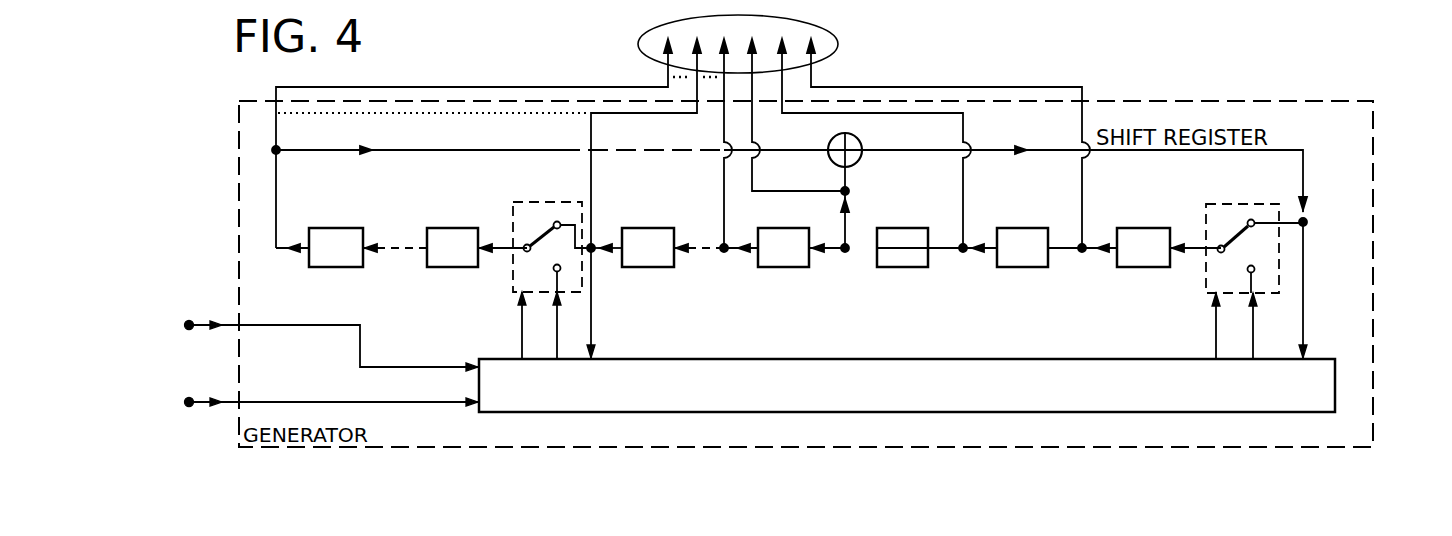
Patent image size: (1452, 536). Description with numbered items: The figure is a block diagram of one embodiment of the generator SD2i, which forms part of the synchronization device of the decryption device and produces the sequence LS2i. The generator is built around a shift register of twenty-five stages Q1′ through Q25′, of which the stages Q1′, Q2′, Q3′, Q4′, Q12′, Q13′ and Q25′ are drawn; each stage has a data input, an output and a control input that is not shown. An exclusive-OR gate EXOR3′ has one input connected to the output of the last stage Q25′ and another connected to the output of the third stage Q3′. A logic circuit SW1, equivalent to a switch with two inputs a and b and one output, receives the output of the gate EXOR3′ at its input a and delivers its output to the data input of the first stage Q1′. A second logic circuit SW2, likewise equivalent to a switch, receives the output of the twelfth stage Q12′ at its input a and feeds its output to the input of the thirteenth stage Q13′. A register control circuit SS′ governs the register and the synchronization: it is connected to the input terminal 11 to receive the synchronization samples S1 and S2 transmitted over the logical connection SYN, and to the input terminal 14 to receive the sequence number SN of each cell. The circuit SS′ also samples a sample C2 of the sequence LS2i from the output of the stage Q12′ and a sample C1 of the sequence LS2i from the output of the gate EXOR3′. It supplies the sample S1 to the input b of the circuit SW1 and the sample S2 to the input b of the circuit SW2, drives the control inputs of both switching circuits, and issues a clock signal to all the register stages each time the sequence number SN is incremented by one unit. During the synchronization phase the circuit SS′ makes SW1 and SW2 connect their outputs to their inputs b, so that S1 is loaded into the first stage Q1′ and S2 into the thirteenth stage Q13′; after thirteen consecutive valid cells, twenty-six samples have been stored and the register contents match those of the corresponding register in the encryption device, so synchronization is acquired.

The sequence LS2i is at (828, 26).
The generator SD2i is at (1177, 118).
The shift register stage Q25′ is at (338, 242).
The shift register stage Q13′ is at (448, 242).
The shift register stage Q12′ is at (648, 246).
The shift register stage Q4′ is at (785, 258).
The shift register stage Q3′ is at (912, 258).
The shift register stage Q2′ is at (1036, 258).
The shift register stage Q1′ is at (1149, 258).
The exclusive-OR gate EXOR3′ is at (855, 165).
The logic circuit SW2 is at (522, 232).
The logic circuit SW1 is at (1218, 233).
The sample C2 is at (591, 298).
The synchronization sample S2 is at (557, 333).
The sample C1 is at (1303, 275).
The synchronization sample S1 is at (1253, 335).
The register control circuit SS′ is at (1072, 370).
The logical connection SYN is at (405, 367).
The sequence number SN is at (278, 402).
The input terminal 11 is at (189, 321).
The input terminal 14 is at (189, 398).